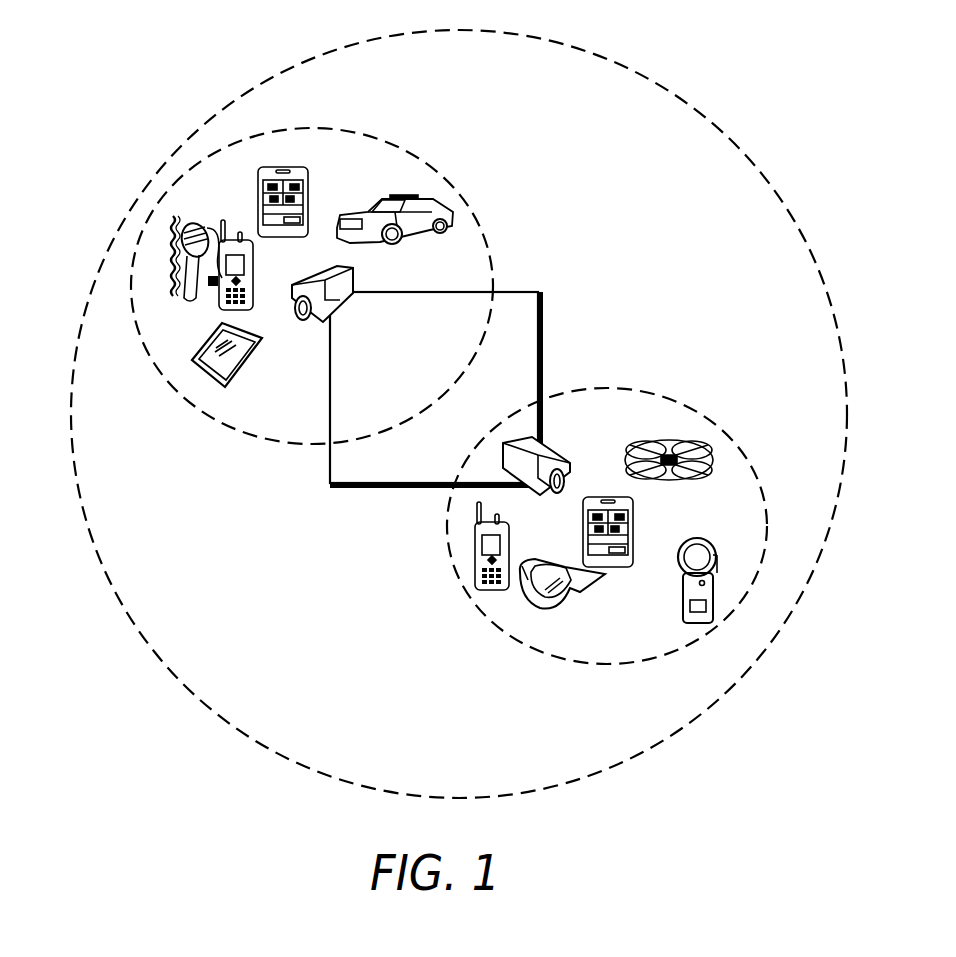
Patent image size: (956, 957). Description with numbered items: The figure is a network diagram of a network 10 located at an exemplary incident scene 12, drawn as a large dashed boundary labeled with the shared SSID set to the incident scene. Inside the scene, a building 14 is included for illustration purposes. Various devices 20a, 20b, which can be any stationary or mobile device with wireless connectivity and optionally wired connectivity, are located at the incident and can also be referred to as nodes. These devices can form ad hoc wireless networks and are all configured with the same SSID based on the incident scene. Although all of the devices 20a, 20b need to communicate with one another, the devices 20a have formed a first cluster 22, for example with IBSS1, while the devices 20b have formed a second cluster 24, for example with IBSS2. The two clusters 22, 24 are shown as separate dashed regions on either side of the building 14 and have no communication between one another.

The network 10 is at (97, 44).
The incident scene 12 is at (692, 100).
The building 14 is at (525, 292).
The devices 20a is at (324, 156).
The devices 20b is at (616, 416).
The first cluster 22 is at (403, 148).
The second cluster 24 is at (713, 423).